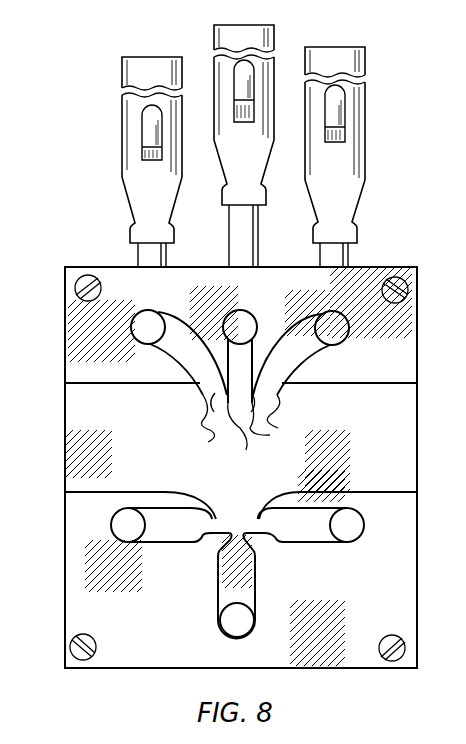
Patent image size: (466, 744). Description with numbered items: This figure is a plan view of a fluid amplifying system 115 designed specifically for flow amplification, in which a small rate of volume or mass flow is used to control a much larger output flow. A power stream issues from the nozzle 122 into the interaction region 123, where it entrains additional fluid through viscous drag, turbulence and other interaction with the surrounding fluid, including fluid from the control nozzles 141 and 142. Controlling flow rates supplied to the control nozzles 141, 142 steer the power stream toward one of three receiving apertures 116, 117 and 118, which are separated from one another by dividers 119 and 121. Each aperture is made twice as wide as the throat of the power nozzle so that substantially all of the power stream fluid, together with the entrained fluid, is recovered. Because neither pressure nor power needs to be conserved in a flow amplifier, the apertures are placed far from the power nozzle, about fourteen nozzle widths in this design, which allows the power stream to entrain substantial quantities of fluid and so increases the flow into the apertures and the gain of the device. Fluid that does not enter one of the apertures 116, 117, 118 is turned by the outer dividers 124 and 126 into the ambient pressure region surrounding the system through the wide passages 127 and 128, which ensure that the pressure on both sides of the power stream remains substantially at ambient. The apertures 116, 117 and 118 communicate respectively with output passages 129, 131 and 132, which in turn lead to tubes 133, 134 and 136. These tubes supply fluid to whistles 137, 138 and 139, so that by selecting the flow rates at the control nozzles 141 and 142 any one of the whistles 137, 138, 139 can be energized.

The fluid amplifying system 115 is at (65, 301).
The aperture 116 is at (283, 420).
The aperture 117 is at (265, 450).
The aperture 118 is at (205, 425).
The divider 119 is at (290, 433).
The divider 121 is at (220, 437).
The nozzle 122 is at (218, 556).
The interaction region 123 is at (258, 491).
The divider 124 is at (280, 398).
The divider 126 is at (203, 398).
The wide passage 127 is at (398, 465).
The wide passage 128 is at (135, 471).
The output passage 129 is at (307, 352).
The output passage 131 is at (257, 330).
The output passage 132 is at (193, 366).
The tube 133 is at (348, 252).
The tube 134 is at (258, 243).
The tube 136 is at (138, 250).
The whistle 137 is at (365, 137).
The whistle 138 is at (275, 30).
The whistle 139 is at (122, 152).
The control nozzle 141 is at (310, 532).
The control nozzle 142 is at (198, 535).